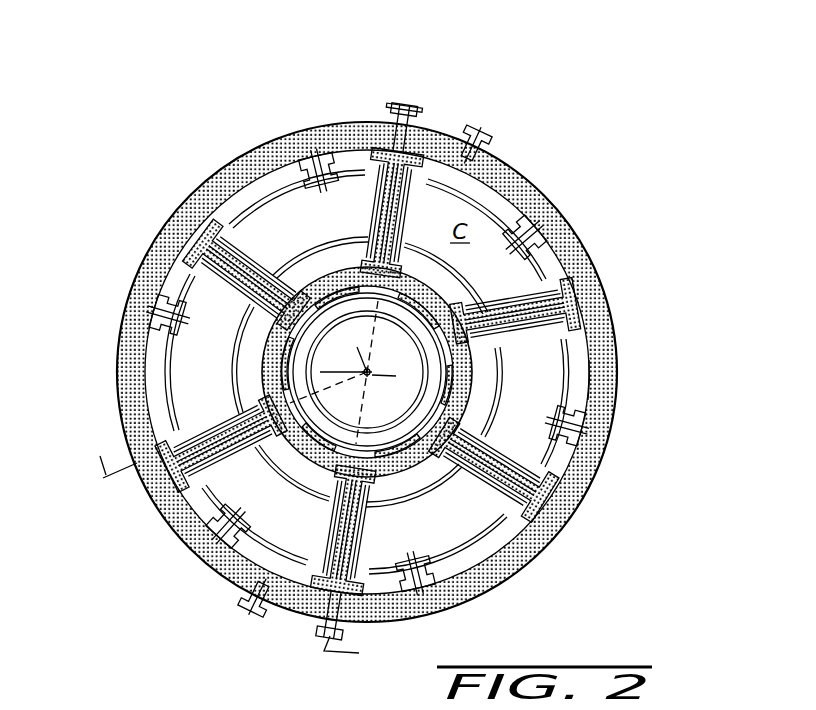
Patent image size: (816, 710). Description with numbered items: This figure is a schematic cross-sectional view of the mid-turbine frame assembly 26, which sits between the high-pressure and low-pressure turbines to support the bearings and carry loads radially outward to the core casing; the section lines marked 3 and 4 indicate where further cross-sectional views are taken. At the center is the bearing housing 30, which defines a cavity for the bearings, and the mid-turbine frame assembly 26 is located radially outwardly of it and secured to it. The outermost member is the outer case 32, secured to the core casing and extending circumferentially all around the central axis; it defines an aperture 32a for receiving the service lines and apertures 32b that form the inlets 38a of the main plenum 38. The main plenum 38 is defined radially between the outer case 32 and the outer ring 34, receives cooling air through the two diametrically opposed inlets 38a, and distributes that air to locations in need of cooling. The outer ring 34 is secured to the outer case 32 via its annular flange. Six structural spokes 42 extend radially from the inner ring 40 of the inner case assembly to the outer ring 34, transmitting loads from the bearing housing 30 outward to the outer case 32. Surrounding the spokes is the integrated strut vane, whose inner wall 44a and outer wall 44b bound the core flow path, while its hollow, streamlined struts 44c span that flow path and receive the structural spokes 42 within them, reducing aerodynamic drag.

The mid-turbine frame assembly 26 is at (658, 149).
The bearing housing 30 is at (436, 321).
The outer case 32 is at (617, 333).
The aperture 32a is at (412, 90).
The apertures 32b is at (240, 624).
The outer ring 34 is at (543, 508).
The main plenum 38 is at (493, 177).
The inlet 38a is at (480, 101).
The inner ring 40 is at (385, 463).
The structural spokes 42 is at (587, 398).
The inner wall 44a is at (346, 250).
The outer wall 44b is at (272, 228).
The struts 44c is at (200, 405).
The section line 3- 3 is at (222, 399).
The section line 4- 4 is at (371, 487).